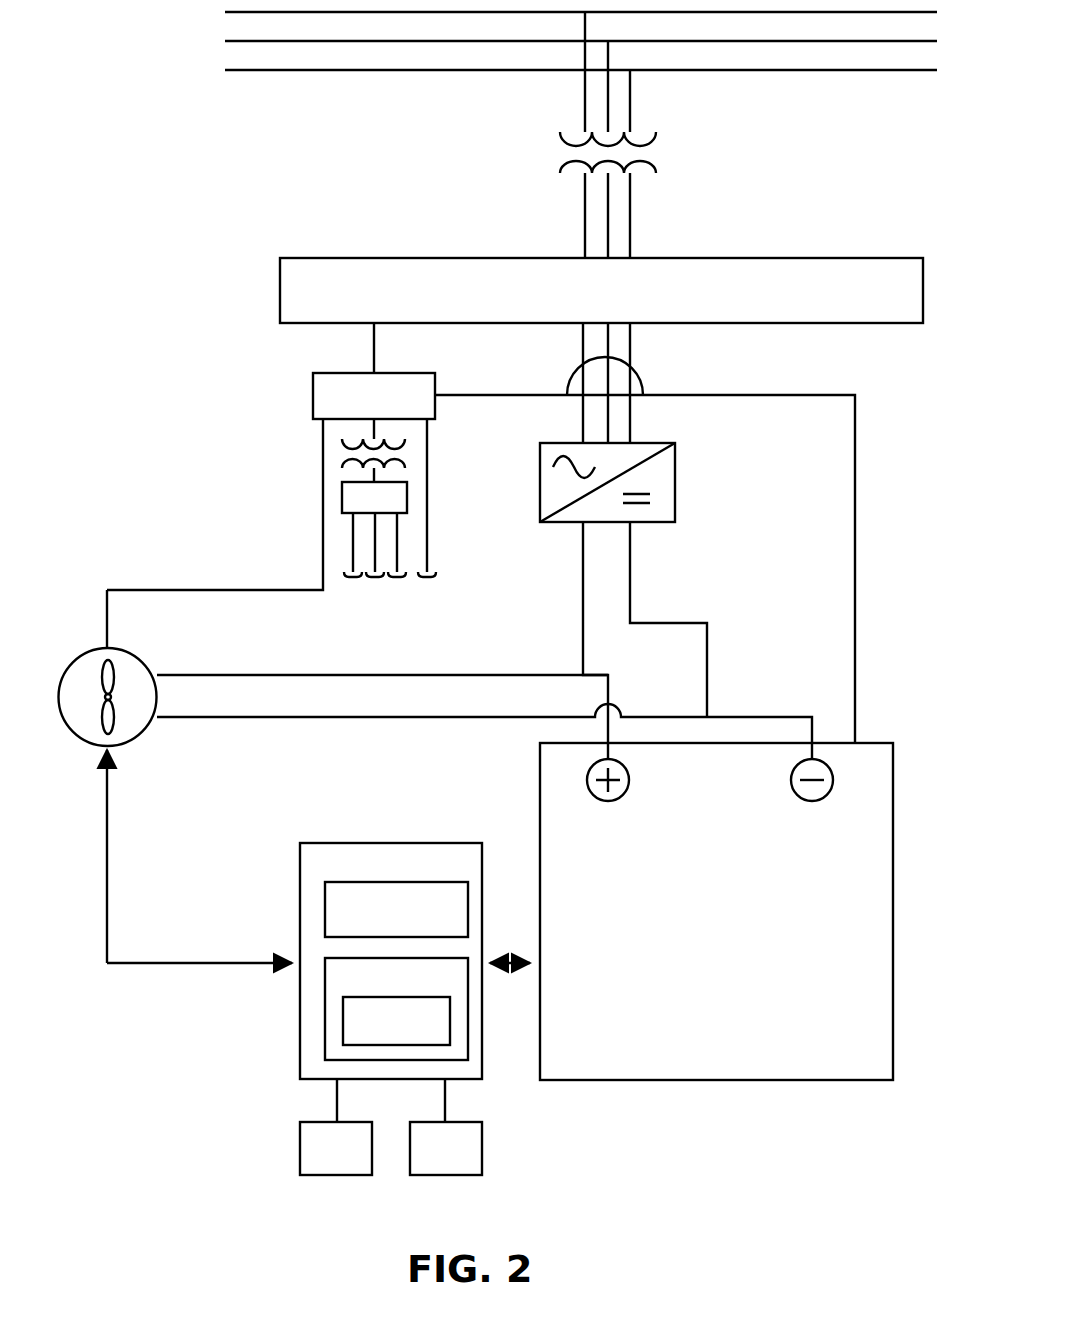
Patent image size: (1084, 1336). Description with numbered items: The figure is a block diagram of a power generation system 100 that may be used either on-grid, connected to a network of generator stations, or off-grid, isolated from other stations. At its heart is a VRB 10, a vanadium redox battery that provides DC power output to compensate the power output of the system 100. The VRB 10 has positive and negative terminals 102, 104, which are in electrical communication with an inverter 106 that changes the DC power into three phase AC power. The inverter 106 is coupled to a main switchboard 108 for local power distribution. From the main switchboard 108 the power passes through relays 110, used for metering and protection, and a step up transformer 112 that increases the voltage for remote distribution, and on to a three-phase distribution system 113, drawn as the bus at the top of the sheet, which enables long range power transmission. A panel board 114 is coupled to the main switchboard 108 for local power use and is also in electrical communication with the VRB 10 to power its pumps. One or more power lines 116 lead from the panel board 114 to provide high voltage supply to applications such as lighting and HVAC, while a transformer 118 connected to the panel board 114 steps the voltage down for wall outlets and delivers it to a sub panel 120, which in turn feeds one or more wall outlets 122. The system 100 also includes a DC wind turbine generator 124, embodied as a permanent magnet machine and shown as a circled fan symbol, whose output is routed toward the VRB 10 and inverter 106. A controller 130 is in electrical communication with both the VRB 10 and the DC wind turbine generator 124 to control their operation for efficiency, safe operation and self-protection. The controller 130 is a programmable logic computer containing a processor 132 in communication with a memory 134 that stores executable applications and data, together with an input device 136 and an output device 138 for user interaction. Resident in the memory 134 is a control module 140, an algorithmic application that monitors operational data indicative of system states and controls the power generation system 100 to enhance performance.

The VRB 10 is at (726, 992).
The power generation system 100 is at (181, 412).
The positive terminal 102 is at (587, 776).
The negative terminal 104 is at (812, 801).
The inverter 106 is at (675, 500).
The main switchboard 108 is at (582, 300).
The relays 110 is at (630, 228).
The step up transformer 112 is at (660, 152).
The three-phase distribution system 113 is at (788, 77).
The panel board 114 is at (351, 409).
The power lines 116 is at (428, 538).
The transformer 118 is at (407, 453).
The sub panel 120 is at (395, 510).
The wall outlets 122 is at (355, 600).
The DC wind turbine generator 124 is at (118, 735).
The controller 130 is at (371, 878).
The processor 132 is at (371, 932).
The memory 134 is at (371, 990).
The input device 136 is at (314, 1165).
The output device 138 is at (424, 1165).
The control module 140 is at (371, 1035).